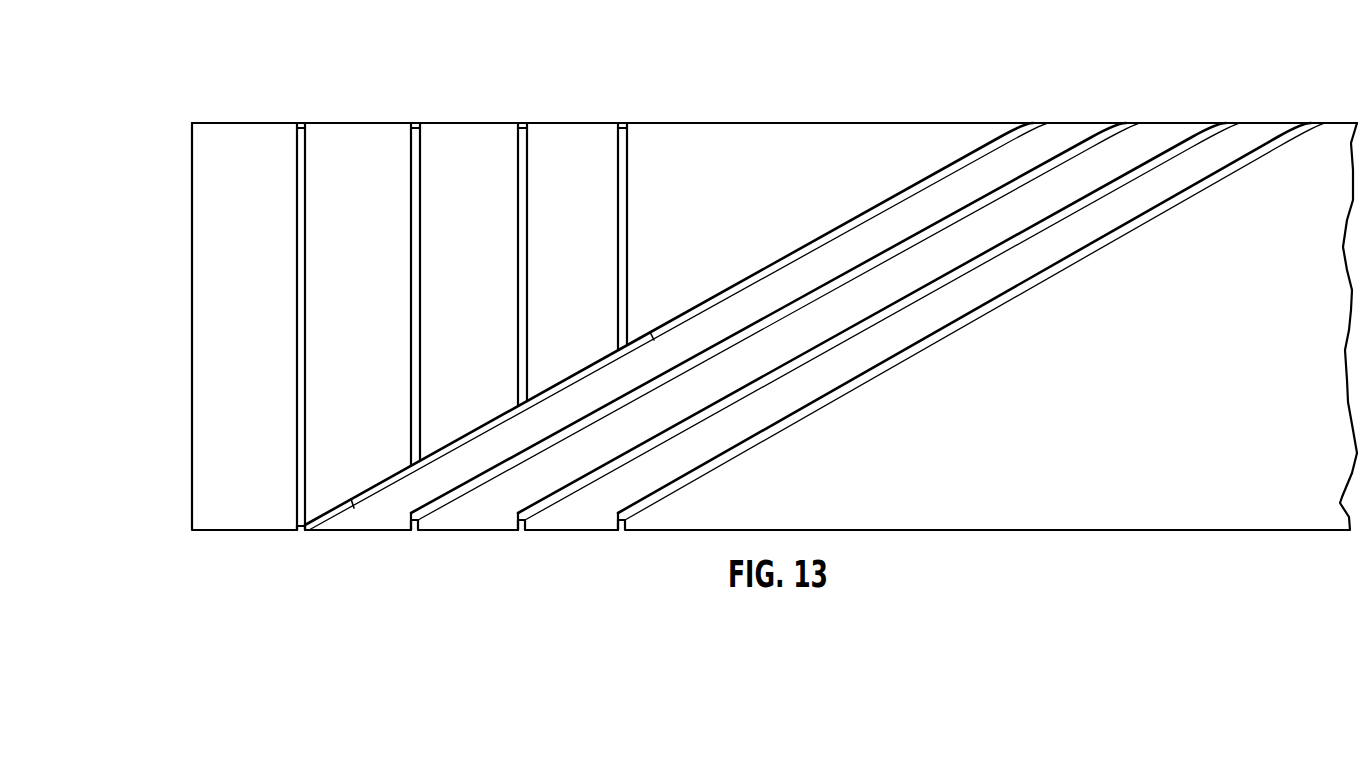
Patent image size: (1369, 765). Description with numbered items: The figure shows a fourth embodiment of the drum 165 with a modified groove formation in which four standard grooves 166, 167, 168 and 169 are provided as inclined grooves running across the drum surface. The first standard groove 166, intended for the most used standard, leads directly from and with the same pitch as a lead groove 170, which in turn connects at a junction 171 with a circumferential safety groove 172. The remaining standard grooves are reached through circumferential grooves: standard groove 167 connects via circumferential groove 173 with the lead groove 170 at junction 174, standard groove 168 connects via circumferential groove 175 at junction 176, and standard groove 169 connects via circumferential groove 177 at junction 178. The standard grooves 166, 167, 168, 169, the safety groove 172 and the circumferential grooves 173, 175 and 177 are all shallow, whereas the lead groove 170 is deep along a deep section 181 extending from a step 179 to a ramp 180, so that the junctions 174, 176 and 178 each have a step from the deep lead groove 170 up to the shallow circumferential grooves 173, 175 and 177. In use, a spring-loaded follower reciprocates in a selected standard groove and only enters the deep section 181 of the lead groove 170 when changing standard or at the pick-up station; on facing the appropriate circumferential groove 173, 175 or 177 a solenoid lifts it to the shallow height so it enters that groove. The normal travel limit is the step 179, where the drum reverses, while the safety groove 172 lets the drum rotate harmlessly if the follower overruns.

The drum 165 is at (204, 130).
The first standard groove 166 is at (797, 249).
The standard groove 167 is at (1136, 122).
The standard groove 168 is at (1228, 122).
The standard groove 169 is at (1316, 122).
The lead groove 170 is at (473, 430).
The junction 171 is at (301, 533).
The circumferential safety groove 172 is at (297, 297).
The circumferential groove 173 is at (411, 298).
The junction 174 is at (408, 464).
The circumferential groove 175 is at (518, 303).
The junction 176 is at (528, 398).
The circumferential groove 177 is at (619, 288).
The junction 178 is at (630, 342).
The step 179 is at (349, 498).
The ramp 180 is at (655, 339).
The deep section 181 is at (521, 410).